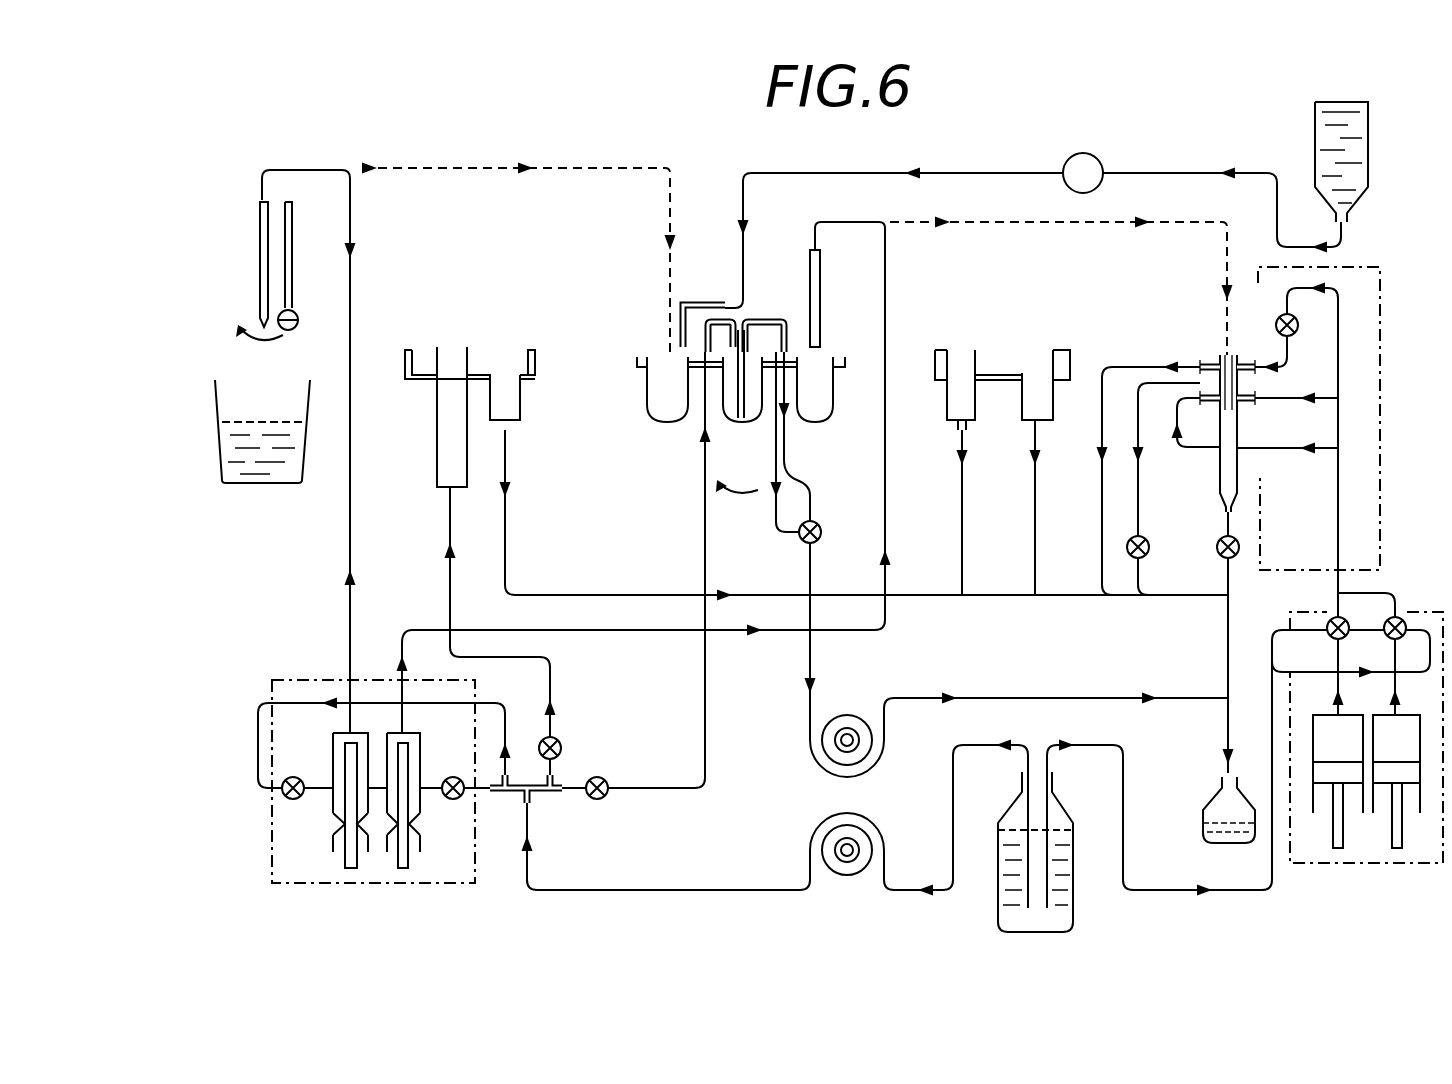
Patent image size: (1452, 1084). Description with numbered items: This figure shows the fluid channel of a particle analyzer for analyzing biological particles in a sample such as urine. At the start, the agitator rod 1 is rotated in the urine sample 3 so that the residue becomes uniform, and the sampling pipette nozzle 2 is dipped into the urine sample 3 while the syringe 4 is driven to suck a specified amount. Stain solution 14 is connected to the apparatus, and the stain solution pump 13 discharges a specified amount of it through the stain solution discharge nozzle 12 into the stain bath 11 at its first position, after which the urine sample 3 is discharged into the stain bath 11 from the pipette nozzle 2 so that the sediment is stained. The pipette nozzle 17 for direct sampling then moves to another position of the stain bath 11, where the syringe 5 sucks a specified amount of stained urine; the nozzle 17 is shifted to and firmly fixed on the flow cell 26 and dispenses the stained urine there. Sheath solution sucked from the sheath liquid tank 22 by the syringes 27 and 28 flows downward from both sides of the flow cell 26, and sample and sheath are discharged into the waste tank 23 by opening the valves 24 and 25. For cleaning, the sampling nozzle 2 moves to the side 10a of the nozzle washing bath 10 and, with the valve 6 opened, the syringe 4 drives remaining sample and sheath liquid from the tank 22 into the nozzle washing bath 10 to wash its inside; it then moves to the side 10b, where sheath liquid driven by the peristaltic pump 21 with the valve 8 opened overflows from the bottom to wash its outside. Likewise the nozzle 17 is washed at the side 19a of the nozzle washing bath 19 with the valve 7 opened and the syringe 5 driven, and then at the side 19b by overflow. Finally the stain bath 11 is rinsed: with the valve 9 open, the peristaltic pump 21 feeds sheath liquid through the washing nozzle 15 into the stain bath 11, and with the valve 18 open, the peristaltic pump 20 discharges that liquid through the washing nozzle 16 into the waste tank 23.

The agitator rod 1 is at (293, 287).
The sampling pipette nozzle 2 is at (260, 286).
The urine sample 3 is at (216, 418).
The syringe 4 is at (336, 828).
The syringe 5 is at (418, 828).
The valve 6 is at (298, 777).
The valve 7 is at (454, 777).
The valve 8 is at (560, 741).
The valve 9 is at (602, 800).
The nozzle washing bath 10 is at (536, 368).
The side of nozzle washing bath 10a is at (522, 420).
The side of nozzle washing bath 10b is at (437, 440).
The stain bath 11 is at (647, 396).
The stain solution discharge nozzle 12 is at (702, 300).
The stain solution pump 13 is at (1101, 160).
The stain solution 14 is at (1368, 160).
The washing nozzle 15 is at (744, 321).
The washing nozzle 16 is at (747, 420).
The pipette nozzle for direct sampling 17 is at (822, 310).
The valve 18 is at (821, 525).
The nozzle washing bath 19 is at (935, 373).
The side of nozzle washing bath 19a is at (1055, 421).
The side of nozzle washing bath 19b is at (977, 421).
The peristaltic pump 20 is at (873, 762).
The peristaltic pump 21 is at (878, 838).
The sheath liquid tank 22 is at (998, 900).
The waste tank 23 is at (1205, 808).
The valve 24 is at (1234, 560).
The valve 25 is at (1148, 540).
The flow cell 26 is at (1239, 440).
The syringe 27 is at (1317, 750).
The syringe 28 is at (1418, 750).